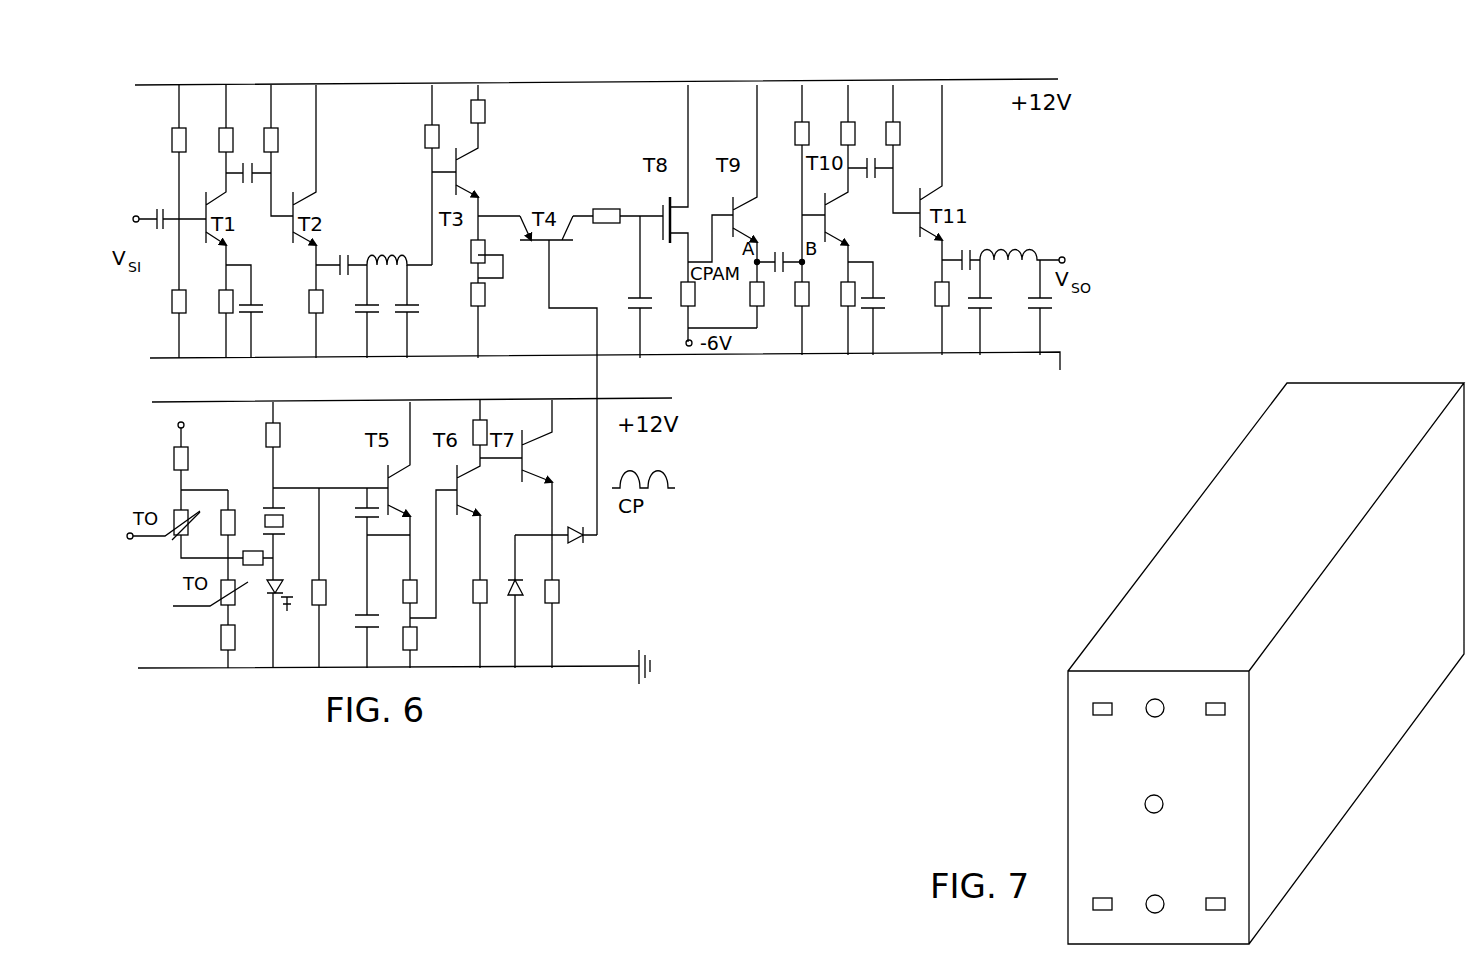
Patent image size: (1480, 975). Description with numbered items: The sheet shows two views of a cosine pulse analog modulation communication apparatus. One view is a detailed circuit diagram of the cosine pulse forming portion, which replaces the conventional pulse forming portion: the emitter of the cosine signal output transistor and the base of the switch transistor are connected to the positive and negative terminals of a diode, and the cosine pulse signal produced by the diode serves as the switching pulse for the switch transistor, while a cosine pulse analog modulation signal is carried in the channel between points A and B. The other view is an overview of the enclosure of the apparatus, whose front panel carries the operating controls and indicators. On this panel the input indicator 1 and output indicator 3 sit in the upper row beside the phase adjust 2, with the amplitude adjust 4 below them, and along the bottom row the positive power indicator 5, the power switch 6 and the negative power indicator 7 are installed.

The input indicator 1 is at (1100, 715).
The phase adjust 2 is at (1155, 717).
The output indicator 3 is at (1213, 715).
The amplitude adjust 4 is at (1163, 804).
The positive power indicator 5 is at (1102, 898).
The power switch 6 is at (1158, 895).
The negative power indicator 7 is at (1212, 898).